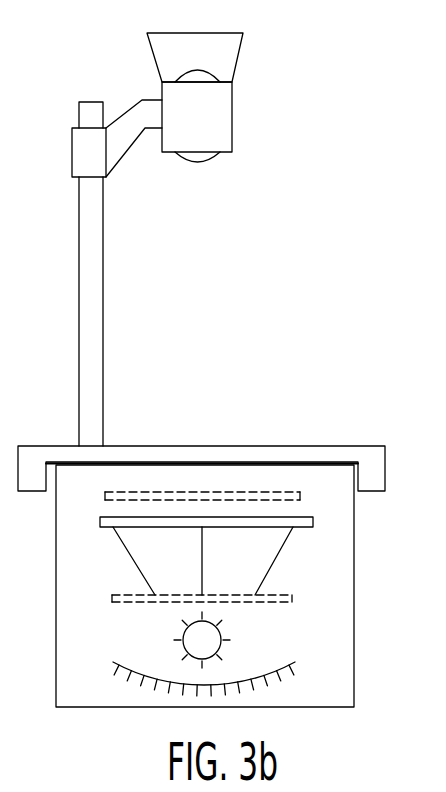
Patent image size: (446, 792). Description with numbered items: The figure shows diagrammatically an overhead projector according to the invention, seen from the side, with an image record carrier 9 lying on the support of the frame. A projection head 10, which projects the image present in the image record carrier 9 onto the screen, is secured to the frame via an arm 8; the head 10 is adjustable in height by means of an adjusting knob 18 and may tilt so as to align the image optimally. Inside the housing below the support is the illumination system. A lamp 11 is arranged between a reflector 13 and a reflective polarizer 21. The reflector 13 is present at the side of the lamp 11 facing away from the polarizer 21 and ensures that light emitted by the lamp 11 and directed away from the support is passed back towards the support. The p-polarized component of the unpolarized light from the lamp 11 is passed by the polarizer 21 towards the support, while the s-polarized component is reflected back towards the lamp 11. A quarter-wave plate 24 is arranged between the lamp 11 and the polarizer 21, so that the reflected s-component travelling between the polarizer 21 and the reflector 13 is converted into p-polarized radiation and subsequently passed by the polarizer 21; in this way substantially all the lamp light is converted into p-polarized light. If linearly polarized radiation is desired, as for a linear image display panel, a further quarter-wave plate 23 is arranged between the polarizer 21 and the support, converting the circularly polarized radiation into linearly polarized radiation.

The arm 8 is at (97, 382).
The image record carrier 9 is at (292, 453).
The projection head 10 is at (218, 117).
The lamp 11 is at (223, 632).
The reflector 13 is at (295, 665).
The adjusting knob 18 is at (82, 152).
The reflective polarizer 21 is at (313, 520).
The λ/4 plate 23 is at (300, 495).
The λ/4 plate 24 is at (292, 598).